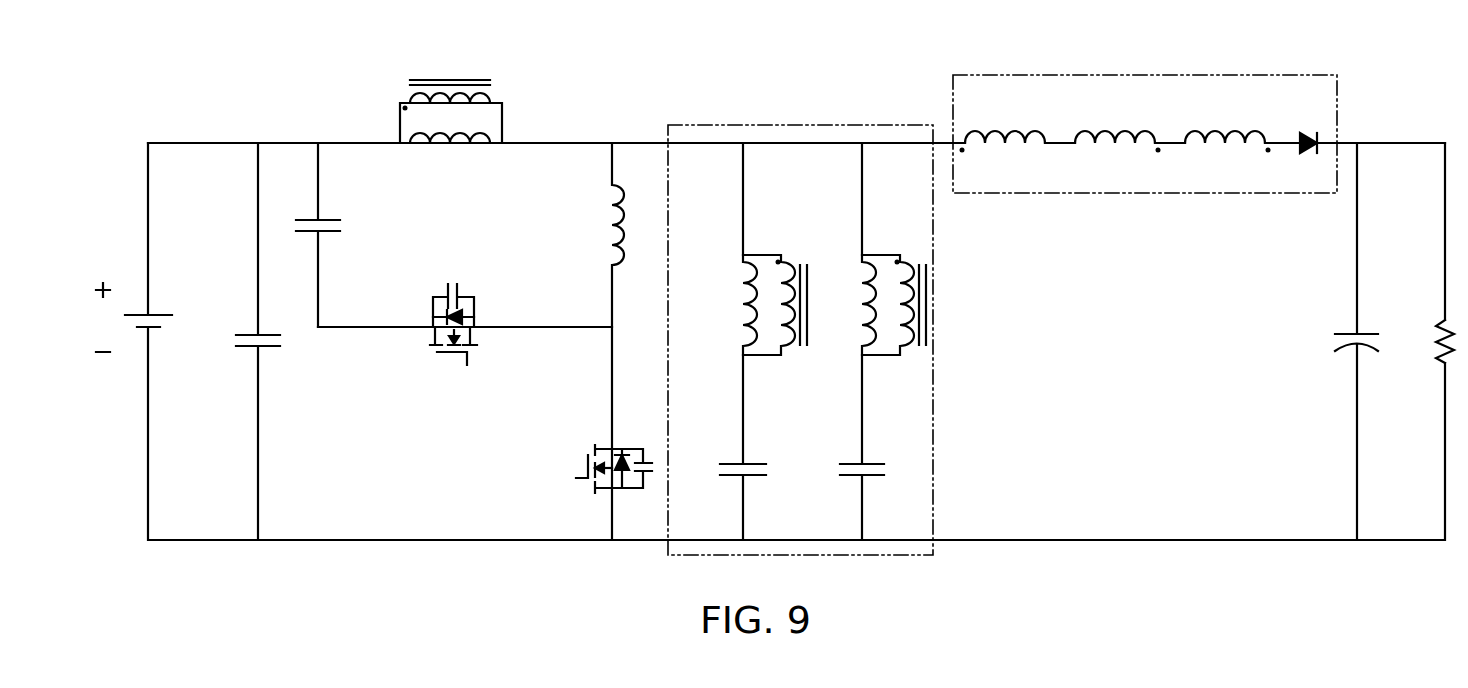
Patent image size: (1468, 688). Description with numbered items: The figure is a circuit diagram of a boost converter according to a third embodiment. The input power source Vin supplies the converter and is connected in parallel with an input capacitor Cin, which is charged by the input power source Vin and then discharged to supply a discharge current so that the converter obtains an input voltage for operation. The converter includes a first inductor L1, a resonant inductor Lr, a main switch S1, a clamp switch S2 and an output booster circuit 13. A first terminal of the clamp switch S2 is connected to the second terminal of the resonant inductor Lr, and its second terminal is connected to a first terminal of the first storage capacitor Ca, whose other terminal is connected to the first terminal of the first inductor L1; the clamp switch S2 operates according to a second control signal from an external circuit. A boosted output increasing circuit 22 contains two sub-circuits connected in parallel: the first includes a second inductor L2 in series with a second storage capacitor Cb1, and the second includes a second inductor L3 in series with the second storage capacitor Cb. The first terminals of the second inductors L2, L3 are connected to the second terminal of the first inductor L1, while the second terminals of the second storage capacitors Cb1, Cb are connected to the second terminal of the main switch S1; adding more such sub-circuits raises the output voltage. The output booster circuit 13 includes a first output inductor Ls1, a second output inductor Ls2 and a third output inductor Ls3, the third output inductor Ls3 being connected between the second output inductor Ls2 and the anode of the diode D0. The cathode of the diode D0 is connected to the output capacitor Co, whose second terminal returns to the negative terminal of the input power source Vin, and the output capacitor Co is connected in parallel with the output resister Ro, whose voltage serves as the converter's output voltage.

The output booster circuit 13 is at (1120, 75).
The boosted output increasing circuit 22 is at (801, 125).
The input power source Vin is at (127, 317).
The input capacitor Cin is at (236, 341).
The first storage capacitor Ca is at (336, 235).
The first inductor L1 is at (451, 129).
The resonant inductor Lr is at (633, 341).
The main switch S1 is at (597, 469).
The clamp switch S2 is at (471, 324).
The second inductor L2 is at (757, 303).
The second inductor L3 is at (876, 303).
The second storage capacitor Cb1 is at (721, 499).
The second storage capacitor Cb is at (843, 499).
The first output inductor Ls1 is at (1003, 125).
The second output inductor Ls2 is at (1118, 125).
The third output inductor Ls3 is at (1228, 125).
The diode D0 is at (1311, 159).
The output capacitor Co is at (1338, 341).
The output resister Ro is at (1428, 341).